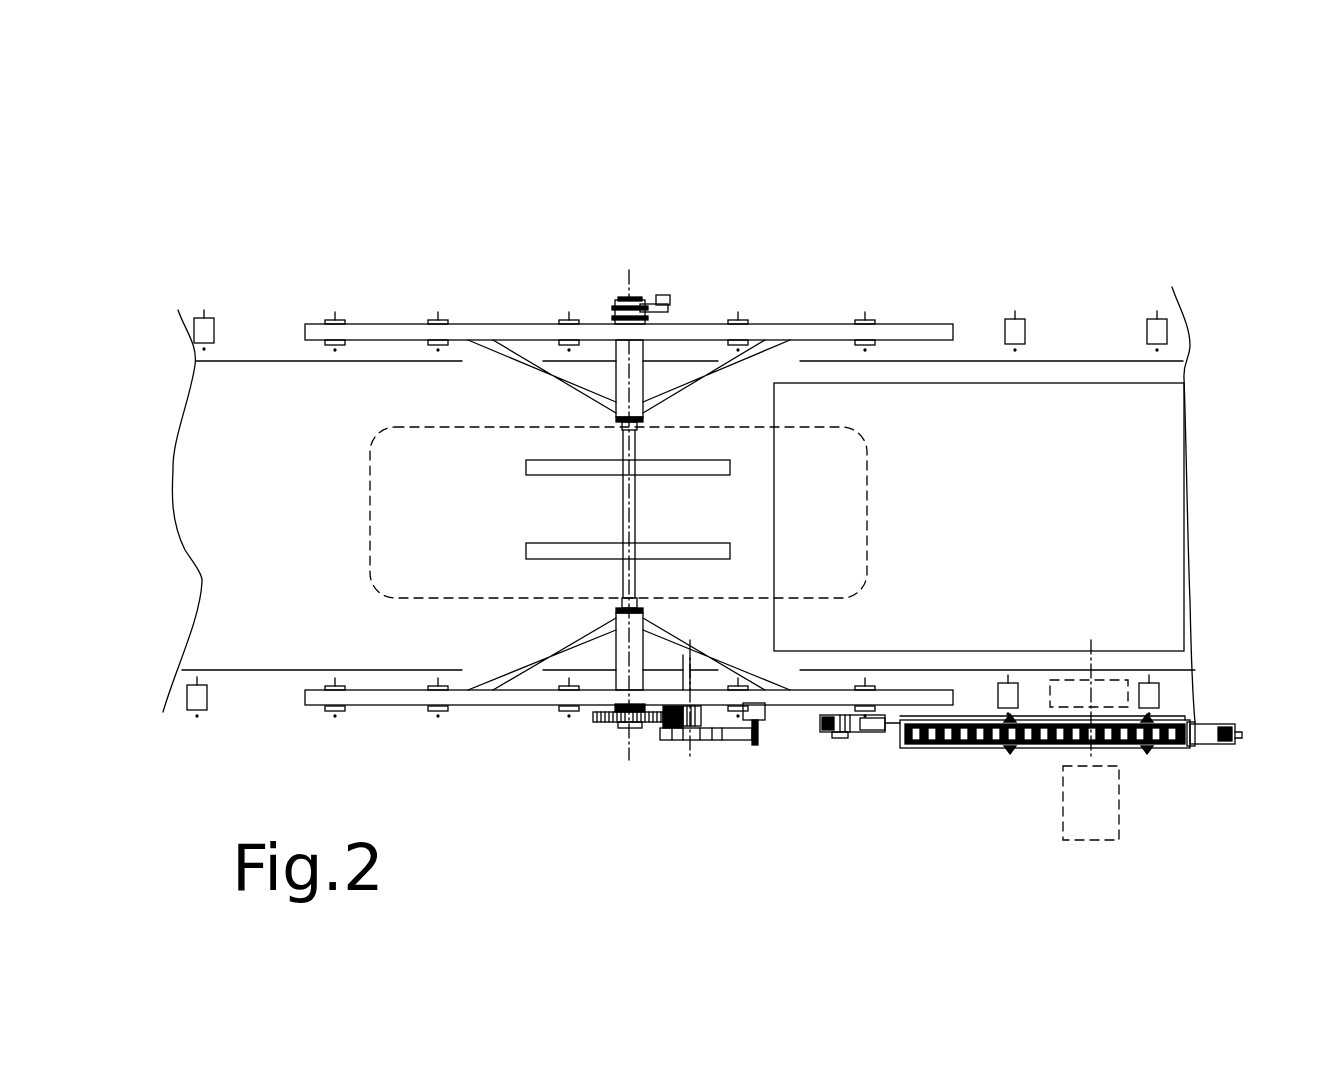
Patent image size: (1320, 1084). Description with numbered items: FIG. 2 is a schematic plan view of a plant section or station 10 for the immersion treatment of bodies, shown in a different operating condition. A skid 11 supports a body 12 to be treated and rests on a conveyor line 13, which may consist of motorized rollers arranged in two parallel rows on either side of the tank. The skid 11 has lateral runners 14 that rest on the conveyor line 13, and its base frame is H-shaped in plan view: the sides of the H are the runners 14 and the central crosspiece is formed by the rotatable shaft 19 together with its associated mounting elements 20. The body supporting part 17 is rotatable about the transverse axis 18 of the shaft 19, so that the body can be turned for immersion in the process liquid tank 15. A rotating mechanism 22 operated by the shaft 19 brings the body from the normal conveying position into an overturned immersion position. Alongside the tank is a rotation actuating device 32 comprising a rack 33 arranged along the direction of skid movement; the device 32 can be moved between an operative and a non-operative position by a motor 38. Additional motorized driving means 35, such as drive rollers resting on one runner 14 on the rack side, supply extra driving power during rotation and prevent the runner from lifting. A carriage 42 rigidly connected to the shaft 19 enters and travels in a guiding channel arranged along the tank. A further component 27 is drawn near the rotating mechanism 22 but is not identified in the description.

The plant section or station 10 is at (1072, 203).
The skid 11 is at (898, 312).
The body 12 is at (370, 554).
The conveyor line 13 is at (200, 325).
The lateral runners 14 is at (388, 328).
The process liquid tank 15 is at (1160, 487).
The body supporting part 17 is at (682, 446).
The transverse axis 18 is at (633, 272).
The rotatable shaft 19 is at (628, 512).
The mounting elements 20 is at (515, 378).
The rotating mechanism 22 is at (605, 742).
The drive motor 27 is at (706, 755).
The rotation actuating device 32 is at (973, 770).
The rack 33 is at (1196, 720).
The motorized driving means 35 is at (1108, 687).
The motor 38 is at (845, 733).
The carriage 42 is at (690, 292).